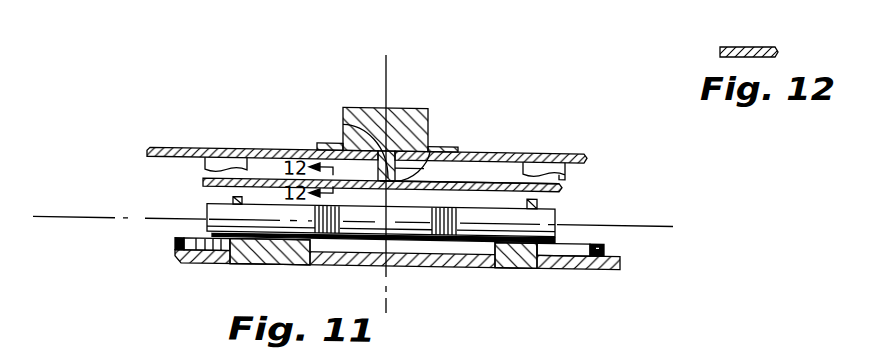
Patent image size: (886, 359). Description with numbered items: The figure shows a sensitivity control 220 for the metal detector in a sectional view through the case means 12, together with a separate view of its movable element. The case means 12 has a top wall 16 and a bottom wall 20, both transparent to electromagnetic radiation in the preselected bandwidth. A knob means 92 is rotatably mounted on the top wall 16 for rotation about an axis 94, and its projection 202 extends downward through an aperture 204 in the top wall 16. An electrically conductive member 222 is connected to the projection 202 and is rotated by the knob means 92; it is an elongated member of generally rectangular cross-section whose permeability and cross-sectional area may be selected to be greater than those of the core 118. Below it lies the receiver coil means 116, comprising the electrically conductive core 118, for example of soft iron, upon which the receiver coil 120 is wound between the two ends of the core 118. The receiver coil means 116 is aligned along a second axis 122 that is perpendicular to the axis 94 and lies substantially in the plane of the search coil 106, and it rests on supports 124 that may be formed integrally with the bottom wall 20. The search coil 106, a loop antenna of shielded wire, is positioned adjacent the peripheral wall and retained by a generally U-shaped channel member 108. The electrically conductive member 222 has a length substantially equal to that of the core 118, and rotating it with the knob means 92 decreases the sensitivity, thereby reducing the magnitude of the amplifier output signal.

In FIG. 11, the case means 12 is at (212, 151).
In FIG. 11, the top wall 16 is at (545, 151).
In FIG. 11, the bottom wall 20 is at (223, 266).
In FIG. 11, the knob means 92 is at (403, 108).
In FIG. 11, the axis 94 is at (385, 68).
In FIG. 11, the search coil 106 is at (604, 244).
In FIG. 11, the U-shaped channel member 108 is at (574, 255).
In FIG. 11, the receiver coil means 116 is at (303, 243).
In FIG. 11, the core 118 is at (538, 204).
In FIG. 11, the receiver coil 120 is at (363, 242).
In FIG. 11, the second axis 122 is at (83, 222).
In FIG. 11, the supports 124 is at (232, 203).
In FIG. 11, the projection 202 is at (427, 150).
In FIG. 11, the aperture 204 is at (343, 128).
In FIG. 11, the sensitivity control 220 is at (562, 184).
In FIG. 11, the electrically conductive member 222 is at (463, 181).
In FIG. 12, the electrically conductive member 222 is at (770, 47).